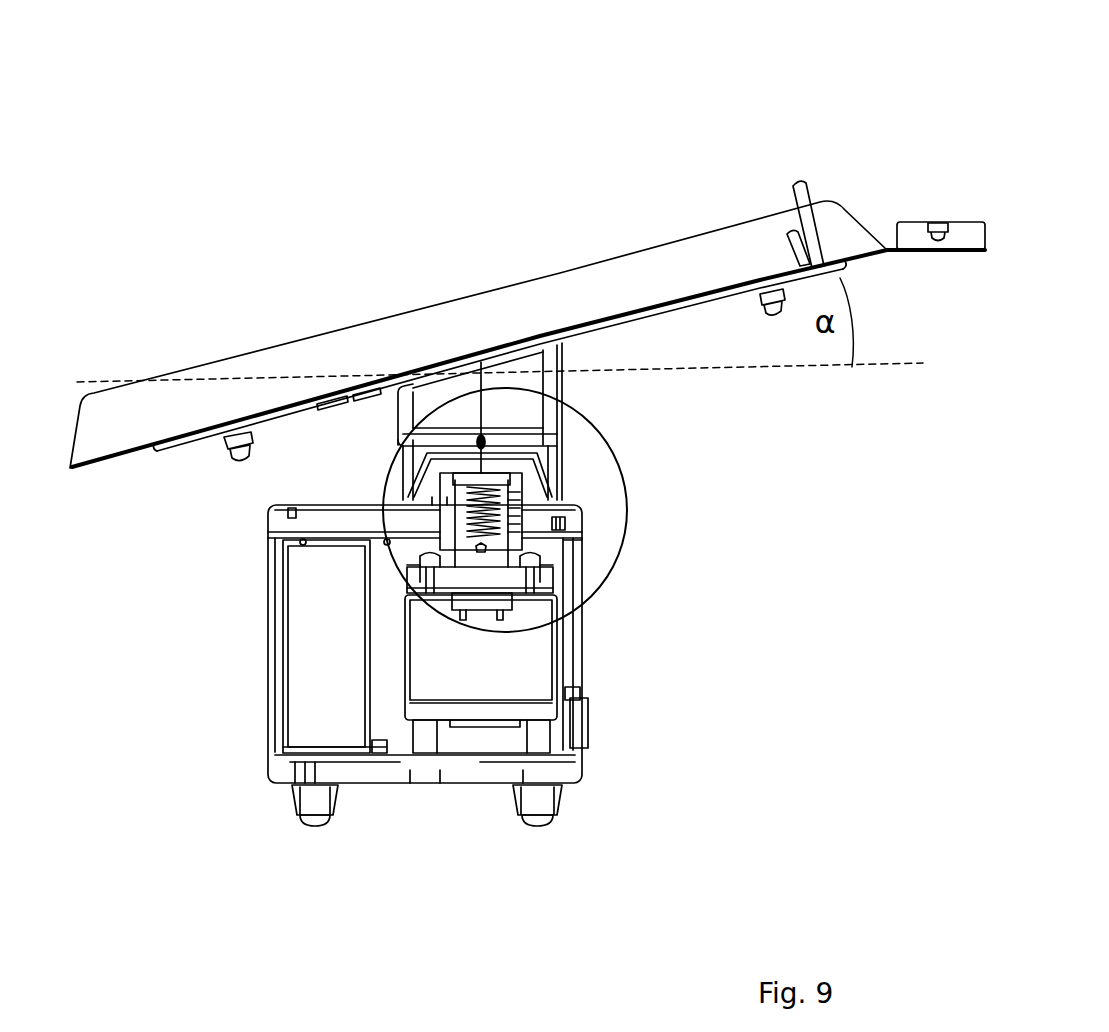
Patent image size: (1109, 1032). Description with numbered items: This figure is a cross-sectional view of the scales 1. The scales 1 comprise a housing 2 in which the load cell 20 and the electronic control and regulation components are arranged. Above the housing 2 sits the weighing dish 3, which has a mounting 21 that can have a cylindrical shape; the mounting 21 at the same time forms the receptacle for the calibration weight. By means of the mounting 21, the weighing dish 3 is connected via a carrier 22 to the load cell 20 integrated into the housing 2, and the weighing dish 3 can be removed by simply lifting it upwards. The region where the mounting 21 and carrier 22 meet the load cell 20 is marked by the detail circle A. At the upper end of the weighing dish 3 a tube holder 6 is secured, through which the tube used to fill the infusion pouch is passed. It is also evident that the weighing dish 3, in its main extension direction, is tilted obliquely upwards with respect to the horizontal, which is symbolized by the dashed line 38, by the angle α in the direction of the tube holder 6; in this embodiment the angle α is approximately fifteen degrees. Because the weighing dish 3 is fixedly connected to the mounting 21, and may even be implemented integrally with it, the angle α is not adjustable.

The scales 1 is at (810, 790).
The housing 2 is at (583, 624).
The weighing dish 3 is at (522, 313).
The tube holder 6 is at (955, 232).
The load cell 20 is at (513, 673).
The mounting 21 is at (557, 387).
The carrier 22 is at (560, 465).
The dashed line 38 is at (673, 368).
The detail region A is at (523, 510).